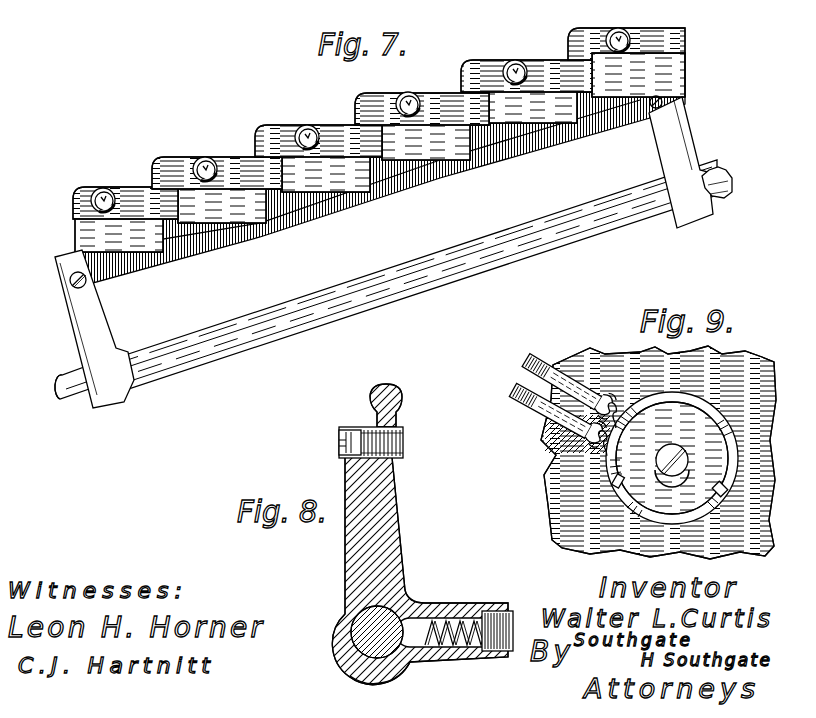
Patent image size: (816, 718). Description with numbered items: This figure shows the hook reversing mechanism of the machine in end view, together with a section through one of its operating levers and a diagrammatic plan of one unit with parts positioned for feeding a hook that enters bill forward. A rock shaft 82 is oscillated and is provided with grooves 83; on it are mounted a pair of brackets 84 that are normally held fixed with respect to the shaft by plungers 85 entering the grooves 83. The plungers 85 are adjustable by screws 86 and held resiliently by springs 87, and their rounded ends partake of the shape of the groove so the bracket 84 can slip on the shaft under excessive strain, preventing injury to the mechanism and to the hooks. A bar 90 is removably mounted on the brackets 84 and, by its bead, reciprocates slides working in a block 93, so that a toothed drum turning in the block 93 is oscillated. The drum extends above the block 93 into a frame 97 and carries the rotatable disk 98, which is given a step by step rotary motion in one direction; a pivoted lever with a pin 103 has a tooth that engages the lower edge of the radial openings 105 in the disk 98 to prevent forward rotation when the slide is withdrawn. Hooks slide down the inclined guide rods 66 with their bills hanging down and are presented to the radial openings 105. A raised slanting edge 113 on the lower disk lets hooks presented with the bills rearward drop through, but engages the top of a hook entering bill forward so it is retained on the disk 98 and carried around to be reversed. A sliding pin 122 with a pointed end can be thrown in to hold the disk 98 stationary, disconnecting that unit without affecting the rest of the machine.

In FIG. 9, the inclined guide rods 66 is at (541, 408).
In FIG. 7, the shaft 82 is at (457, 285).
In FIG. 8, the shaft 82 is at (360, 638).
In FIG. 8, the grooves 83 is at (397, 603).
In FIG. 7, the brackets 84 is at (85, 325).
In FIG. 8, the brackets 84 is at (394, 506).
In FIG. 8, the plungers 85 is at (411, 664).
In FIG. 8, the screws 86 is at (506, 612).
In FIG. 8, the springs 87 is at (465, 617).
In FIG. 7, the bar 90 is at (68, 262).
In FIG. 8, the bar 90 is at (403, 393).
In FIG. 7, the block 93 is at (78, 232).
In FIG. 7, the frame 97 is at (182, 157).
In FIG. 9, the frame 97 is at (556, 485).
In FIG. 9, the rotatable disk 98 is at (641, 400).
In FIG. 9, the pin 103 is at (662, 394).
In FIG. 9, the radial openings 105 is at (724, 394).
In FIG. 9, the raised slanting edge 113 is at (633, 403).
In FIG. 7, the sliding pin 122 is at (523, 52).